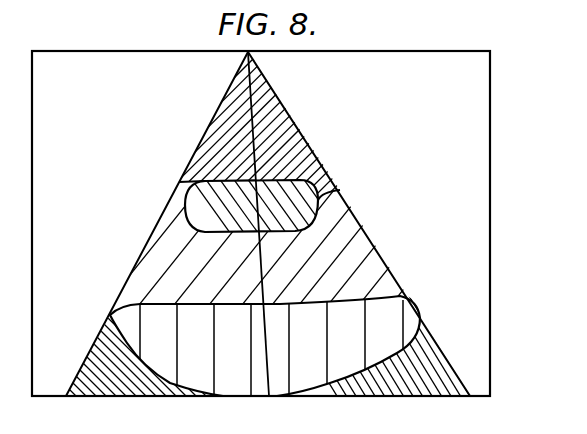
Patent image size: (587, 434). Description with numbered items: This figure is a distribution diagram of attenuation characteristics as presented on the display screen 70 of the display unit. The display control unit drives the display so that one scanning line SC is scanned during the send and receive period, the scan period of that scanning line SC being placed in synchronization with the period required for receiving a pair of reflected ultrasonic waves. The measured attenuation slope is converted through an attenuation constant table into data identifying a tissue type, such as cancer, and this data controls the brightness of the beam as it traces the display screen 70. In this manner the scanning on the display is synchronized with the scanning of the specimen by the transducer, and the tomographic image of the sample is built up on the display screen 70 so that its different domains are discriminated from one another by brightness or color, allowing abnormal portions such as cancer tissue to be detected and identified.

The display screen 70 is at (480, 109).
The scanning line SC is at (262, 398).